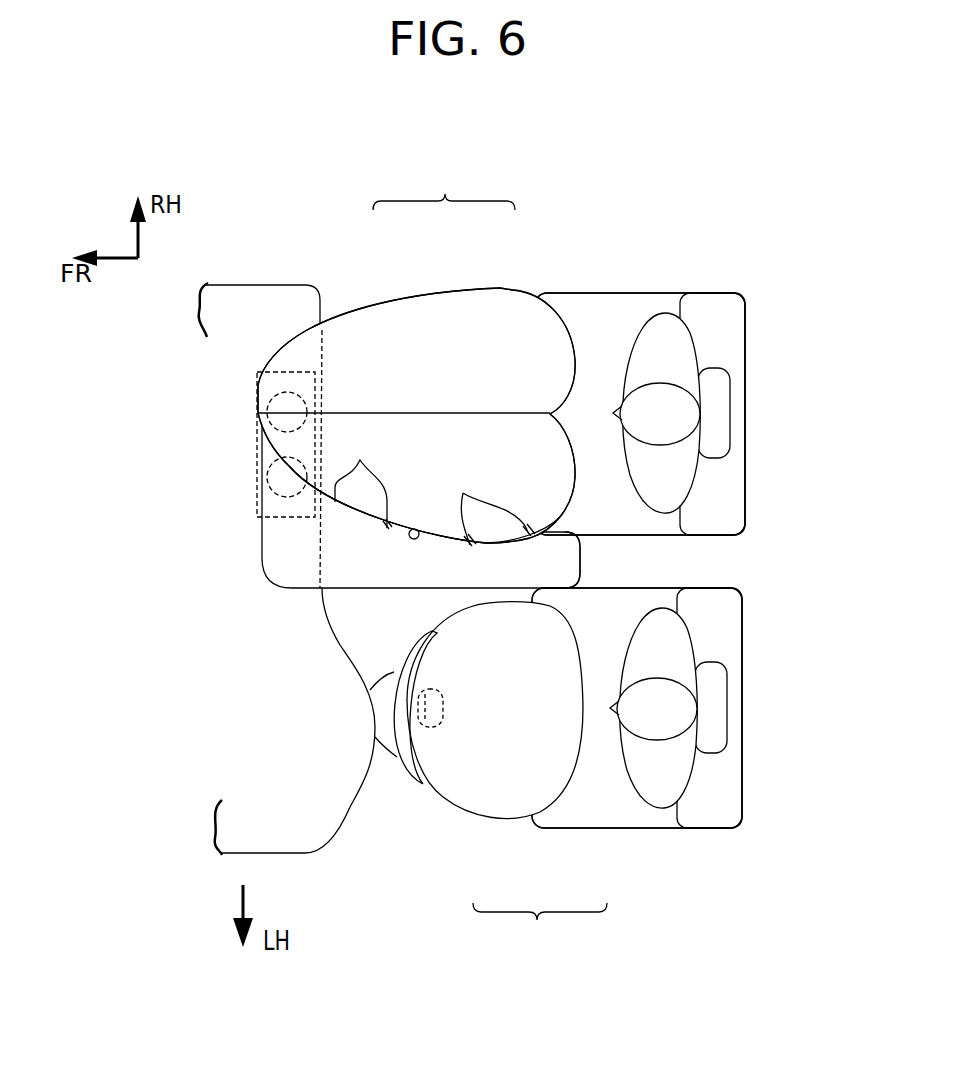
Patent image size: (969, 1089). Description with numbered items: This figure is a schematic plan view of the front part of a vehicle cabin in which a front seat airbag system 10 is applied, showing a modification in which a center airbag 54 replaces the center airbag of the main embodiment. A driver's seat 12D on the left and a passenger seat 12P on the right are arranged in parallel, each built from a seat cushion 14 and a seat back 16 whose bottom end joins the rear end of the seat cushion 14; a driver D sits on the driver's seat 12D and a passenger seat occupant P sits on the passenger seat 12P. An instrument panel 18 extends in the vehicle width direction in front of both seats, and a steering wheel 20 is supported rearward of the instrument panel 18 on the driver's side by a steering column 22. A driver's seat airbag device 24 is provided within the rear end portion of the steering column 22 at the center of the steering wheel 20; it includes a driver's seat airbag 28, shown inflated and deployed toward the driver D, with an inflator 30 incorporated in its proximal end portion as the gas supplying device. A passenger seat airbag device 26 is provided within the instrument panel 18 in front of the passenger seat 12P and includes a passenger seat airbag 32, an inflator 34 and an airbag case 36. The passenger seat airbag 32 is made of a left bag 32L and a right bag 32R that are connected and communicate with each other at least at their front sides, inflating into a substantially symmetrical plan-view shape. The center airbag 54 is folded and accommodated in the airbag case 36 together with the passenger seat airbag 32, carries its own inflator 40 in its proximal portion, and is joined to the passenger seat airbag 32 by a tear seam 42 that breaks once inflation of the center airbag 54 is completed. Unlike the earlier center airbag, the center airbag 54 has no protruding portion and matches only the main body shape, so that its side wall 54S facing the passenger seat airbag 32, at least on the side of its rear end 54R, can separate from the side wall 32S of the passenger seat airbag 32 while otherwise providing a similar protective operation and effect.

The front seat airbag system 10 is at (593, 236).
The passenger seat 12P is at (731, 346).
The driver's seat 12D is at (729, 652).
The seat cushion 14 is at (628, 302).
The seat back 16 is at (697, 300).
The instrument panel 18 is at (320, 825).
The steering wheel 20 is at (416, 778).
The steering column 22 is at (378, 740).
The driver's seat airbag device 24 is at (540, 931).
The passenger seat airbag device 26 is at (514, 280).
The driver's seat airbag 28 is at (462, 797).
The inflator 30 is at (437, 714).
The passenger seat airbag 32 is at (444, 185).
The right bag 32R is at (373, 314).
The left bag 32L is at (447, 430).
The side wall 32S is at (470, 542).
The inflator 34 is at (295, 400).
The airbag case 36 is at (280, 372).
The inflator 40 is at (283, 484).
The tear seam 42 is at (360, 460).
The center airbag 54 is at (344, 552).
The rear end 54R is at (583, 563).
The side wall 54S is at (412, 539).
The passenger seat occupant P is at (694, 330).
The driver D is at (694, 636).